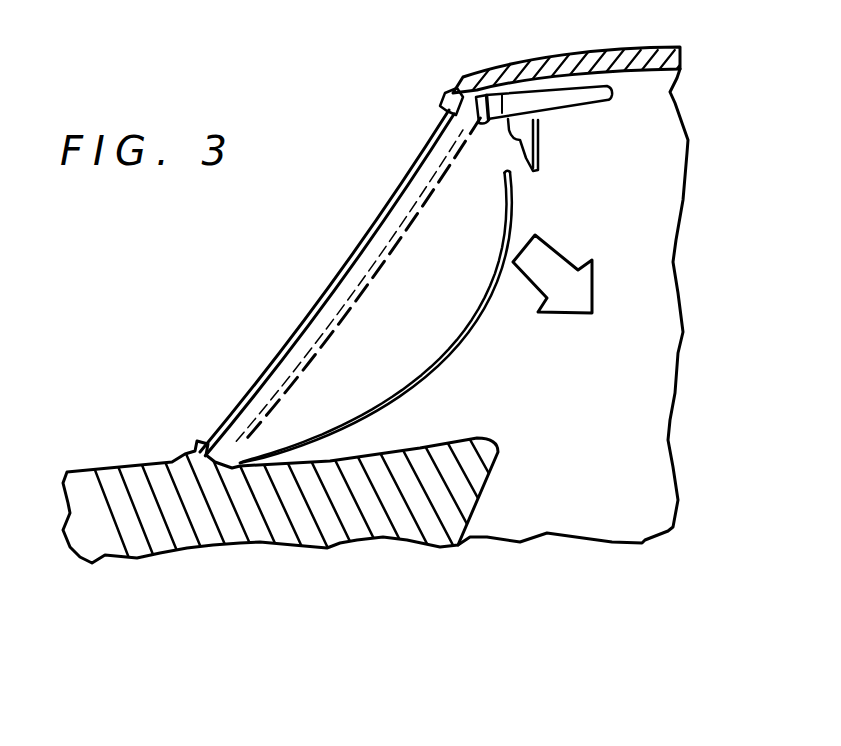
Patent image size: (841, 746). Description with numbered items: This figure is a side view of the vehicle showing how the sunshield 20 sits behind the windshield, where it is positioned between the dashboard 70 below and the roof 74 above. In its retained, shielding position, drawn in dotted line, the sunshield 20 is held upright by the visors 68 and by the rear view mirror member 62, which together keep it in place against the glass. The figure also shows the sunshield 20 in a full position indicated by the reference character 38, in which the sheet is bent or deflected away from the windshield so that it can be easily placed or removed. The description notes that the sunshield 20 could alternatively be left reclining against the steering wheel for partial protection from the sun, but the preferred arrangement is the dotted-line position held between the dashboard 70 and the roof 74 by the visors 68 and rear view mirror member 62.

The sunshield 20 is at (255, 428).
The full position 38 is at (272, 449).
The rear view mirror member 62 is at (538, 145).
The visors 68 is at (557, 104).
The dashboard 70 is at (387, 463).
The roof 74 is at (648, 47).